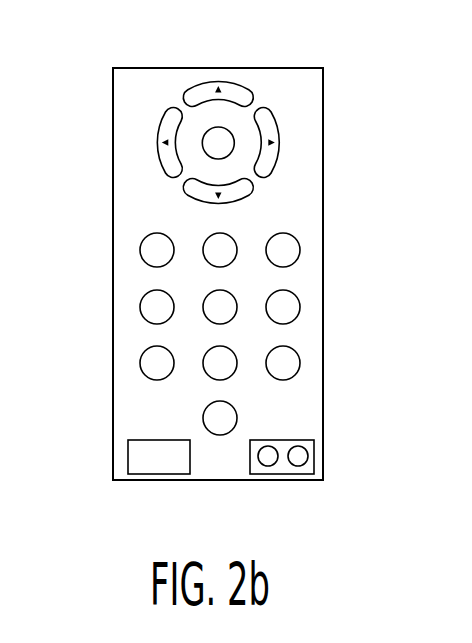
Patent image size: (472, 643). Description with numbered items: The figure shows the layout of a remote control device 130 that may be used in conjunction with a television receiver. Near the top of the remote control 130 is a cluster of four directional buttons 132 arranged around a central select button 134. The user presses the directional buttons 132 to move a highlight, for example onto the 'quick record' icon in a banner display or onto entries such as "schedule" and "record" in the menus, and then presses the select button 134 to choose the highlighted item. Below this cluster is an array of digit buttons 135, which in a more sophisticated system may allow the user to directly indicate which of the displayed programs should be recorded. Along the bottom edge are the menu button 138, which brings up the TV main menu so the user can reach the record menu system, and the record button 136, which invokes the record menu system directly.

The remote control device 130 is at (397, 309).
The directional buttons 132 is at (186, 184).
The select button 134 is at (204, 136).
The digit buttons 135 is at (126, 283).
The record button 136 is at (315, 460).
The menu button 138 is at (128, 458).